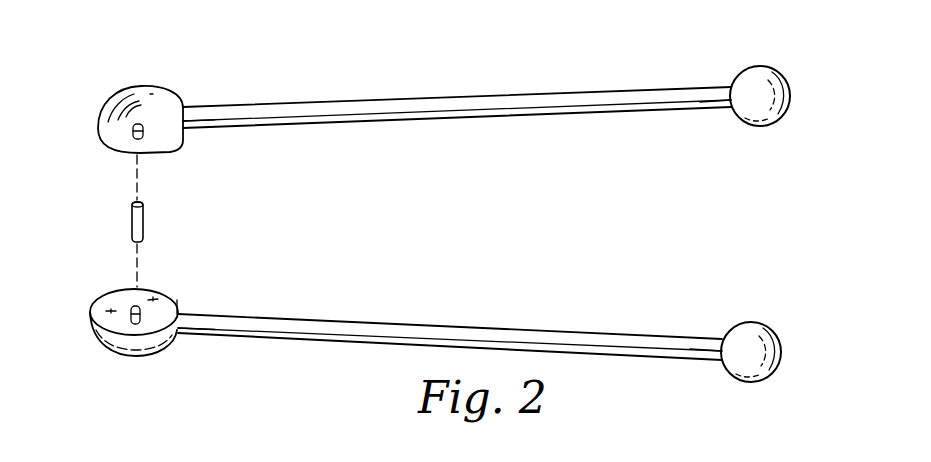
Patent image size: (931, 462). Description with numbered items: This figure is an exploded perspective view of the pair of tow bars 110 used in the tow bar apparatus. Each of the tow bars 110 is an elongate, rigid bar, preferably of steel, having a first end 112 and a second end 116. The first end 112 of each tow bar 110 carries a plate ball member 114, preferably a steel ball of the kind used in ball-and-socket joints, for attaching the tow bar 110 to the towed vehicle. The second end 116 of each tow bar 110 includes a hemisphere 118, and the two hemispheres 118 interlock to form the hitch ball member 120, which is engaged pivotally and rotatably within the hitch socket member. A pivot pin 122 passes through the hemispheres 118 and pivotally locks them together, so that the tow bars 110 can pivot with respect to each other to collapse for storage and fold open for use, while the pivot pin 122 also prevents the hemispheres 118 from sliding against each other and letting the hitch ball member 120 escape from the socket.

The tow bar 110 is at (463, 98).
The first end 112 is at (715, 106).
The plate ball member 114 is at (776, 68).
The second end 116 is at (196, 130).
The hemisphere 118 is at (121, 93).
The hitch ball member 120 is at (135, 358).
The pivot pin 122 is at (131, 222).